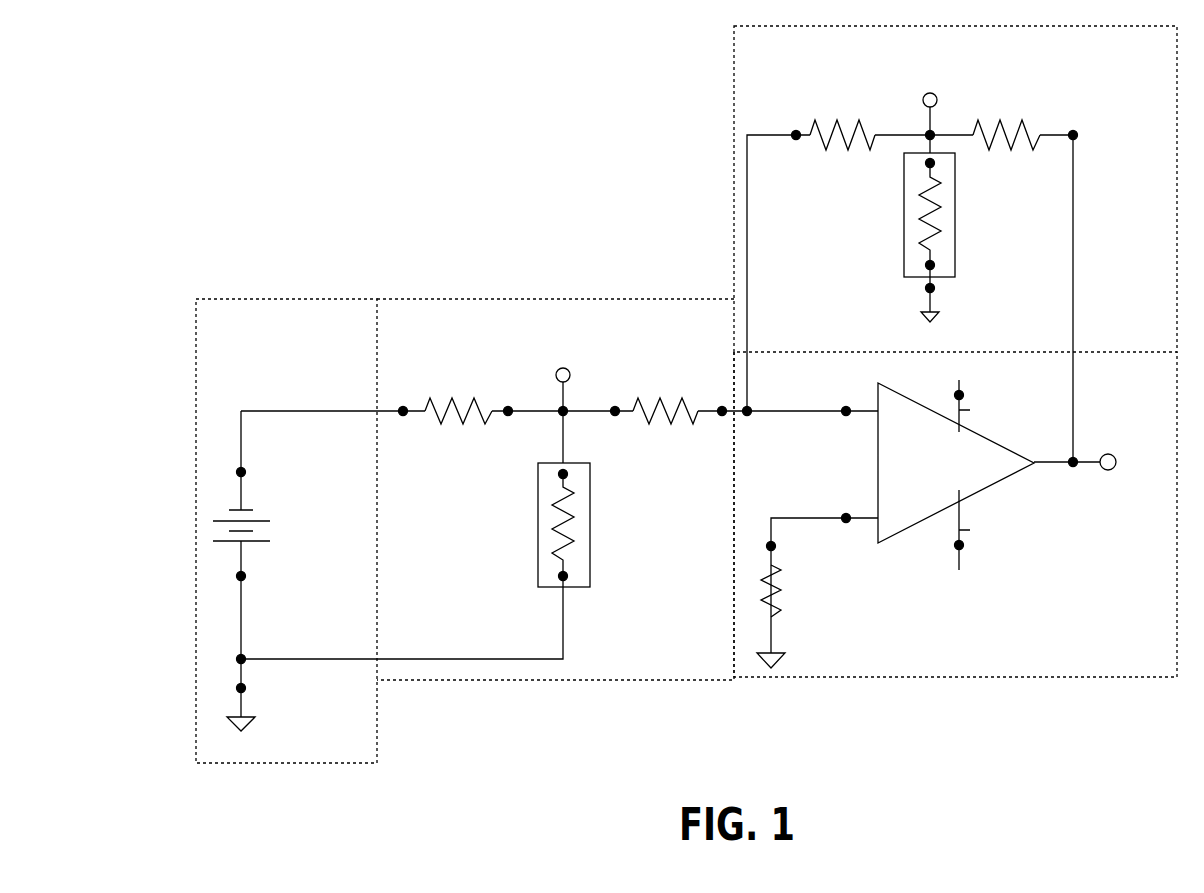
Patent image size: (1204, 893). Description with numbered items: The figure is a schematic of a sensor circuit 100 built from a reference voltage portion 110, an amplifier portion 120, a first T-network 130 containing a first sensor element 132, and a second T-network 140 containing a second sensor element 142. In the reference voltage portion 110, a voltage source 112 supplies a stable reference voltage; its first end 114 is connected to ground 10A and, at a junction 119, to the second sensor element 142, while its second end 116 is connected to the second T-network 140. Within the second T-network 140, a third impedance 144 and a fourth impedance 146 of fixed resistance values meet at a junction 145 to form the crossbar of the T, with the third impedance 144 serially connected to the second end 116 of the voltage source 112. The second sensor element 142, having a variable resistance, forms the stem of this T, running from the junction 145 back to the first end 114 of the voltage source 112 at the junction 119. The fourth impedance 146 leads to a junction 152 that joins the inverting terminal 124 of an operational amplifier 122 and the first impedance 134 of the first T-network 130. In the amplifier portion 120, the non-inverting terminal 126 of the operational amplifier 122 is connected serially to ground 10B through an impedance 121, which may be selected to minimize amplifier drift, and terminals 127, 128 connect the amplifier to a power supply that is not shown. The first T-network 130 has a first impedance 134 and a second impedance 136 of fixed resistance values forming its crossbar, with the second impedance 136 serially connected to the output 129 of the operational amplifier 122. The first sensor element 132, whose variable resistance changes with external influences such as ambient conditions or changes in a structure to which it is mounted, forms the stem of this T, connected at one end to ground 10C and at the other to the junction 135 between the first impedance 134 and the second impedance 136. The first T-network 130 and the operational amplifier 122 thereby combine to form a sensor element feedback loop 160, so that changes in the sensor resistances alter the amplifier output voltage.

The sensor circuit 100 is at (335, 158).
The reference voltage portion 110 is at (313, 298).
The voltage source 112 is at (280, 504).
The first end 114 is at (243, 578).
The second end 116 is at (243, 472).
The junction 119 is at (243, 662).
The amplifier portion 120 is at (985, 678).
The impedance 121 is at (775, 592).
The operational amplifier 122 is at (925, 523).
The inverting terminal 124 is at (862, 410).
The non-inverting terminal 126 is at (863, 520).
The terminal 127 is at (970, 410).
The terminal 128 is at (970, 530).
The output 129 is at (1050, 464).
The first T-network 130 is at (734, 92).
The first sensor element 132 is at (904, 210).
The first impedance 134 is at (835, 130).
The junction 135 is at (925, 133).
The second impedance 136 is at (1008, 128).
The second T-network 140 is at (530, 296).
The second sensor element 142 is at (590, 560).
The third impedance 144 is at (458, 416).
The junction 145 is at (566, 409).
The fourth impedance 146 is at (655, 416).
The junction 152 is at (747, 413).
The feedback loop 160 is at (1073, 272).
The ground 10A is at (261, 737).
The ground 10B is at (797, 660).
The ground 10C is at (956, 319).